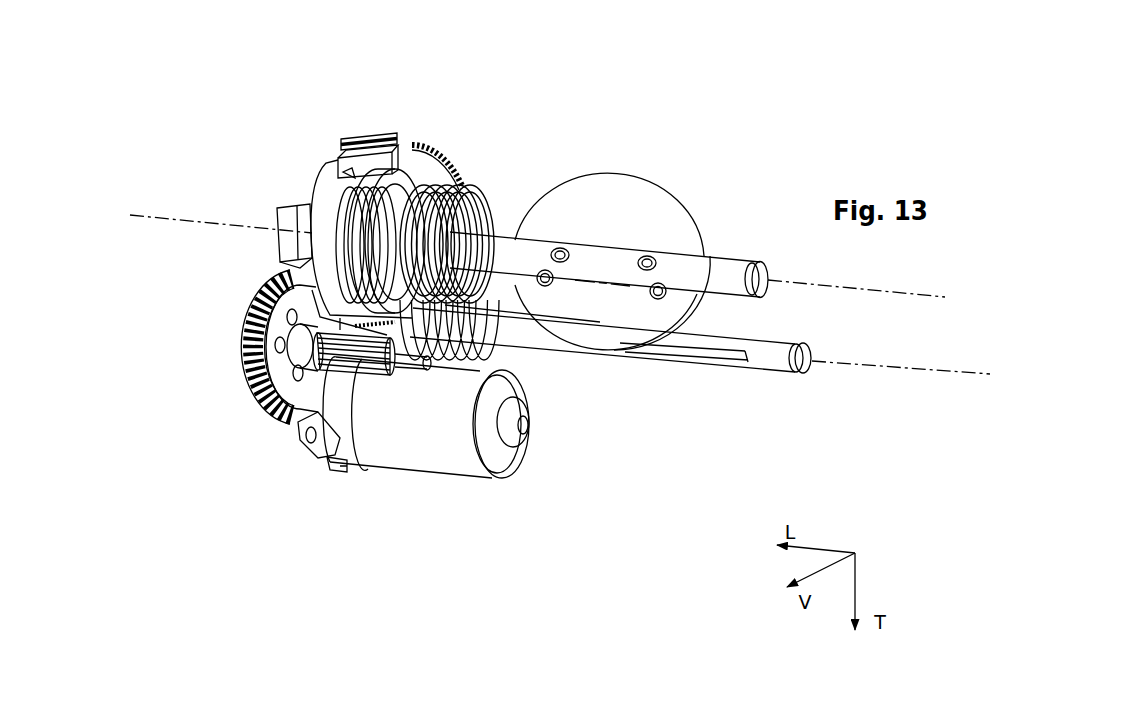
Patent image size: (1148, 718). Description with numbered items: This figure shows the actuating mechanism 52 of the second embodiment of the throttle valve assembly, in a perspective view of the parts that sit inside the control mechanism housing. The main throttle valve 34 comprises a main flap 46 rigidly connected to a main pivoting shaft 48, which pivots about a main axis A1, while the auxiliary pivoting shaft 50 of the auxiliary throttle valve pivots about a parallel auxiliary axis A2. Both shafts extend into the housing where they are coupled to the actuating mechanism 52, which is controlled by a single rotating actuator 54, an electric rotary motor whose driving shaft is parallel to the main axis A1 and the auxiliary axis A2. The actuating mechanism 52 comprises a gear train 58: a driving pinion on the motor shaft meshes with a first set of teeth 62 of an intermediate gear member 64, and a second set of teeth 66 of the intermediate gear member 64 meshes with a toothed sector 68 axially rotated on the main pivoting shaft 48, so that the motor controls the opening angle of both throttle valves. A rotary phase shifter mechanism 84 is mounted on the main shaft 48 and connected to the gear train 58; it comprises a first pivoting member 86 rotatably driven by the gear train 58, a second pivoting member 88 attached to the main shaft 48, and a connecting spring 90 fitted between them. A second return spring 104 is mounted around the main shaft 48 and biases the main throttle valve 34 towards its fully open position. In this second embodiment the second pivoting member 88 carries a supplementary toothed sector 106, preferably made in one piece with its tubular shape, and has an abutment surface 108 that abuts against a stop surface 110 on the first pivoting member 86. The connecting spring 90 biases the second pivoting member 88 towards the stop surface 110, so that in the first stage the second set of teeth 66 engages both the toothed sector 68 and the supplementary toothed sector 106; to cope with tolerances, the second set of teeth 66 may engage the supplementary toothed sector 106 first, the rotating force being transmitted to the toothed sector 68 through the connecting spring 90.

The main throttle valve 34 is at (652, 166).
The main flap 46 is at (665, 222).
The main pivoting shaft 48 is at (722, 258).
The auxiliary pivoting shaft 50 is at (762, 373).
The actuating mechanism 52 is at (201, 155).
The rotating actuator 54 is at (440, 478).
The gear train 58 is at (237, 348).
The first set of teeth 62 is at (243, 378).
The intermediate gear member 64 is at (250, 430).
The second set of teeth 66 is at (343, 376).
The toothed sector 68 is at (364, 150).
The rotary phase shifter mechanism 84 is at (483, 152).
The first pivoting member 86 is at (312, 196).
The second pivoting member 88 is at (441, 187).
The connecting spring 90 is at (347, 253).
The second return spring 104 is at (497, 211).
The supplementary toothed sector 106 is at (437, 167).
The abutment surface 108 is at (401, 165).
The stop surface 110 is at (361, 140).
The main axis A1 is at (896, 289).
The auxiliary axis A2 is at (918, 367).